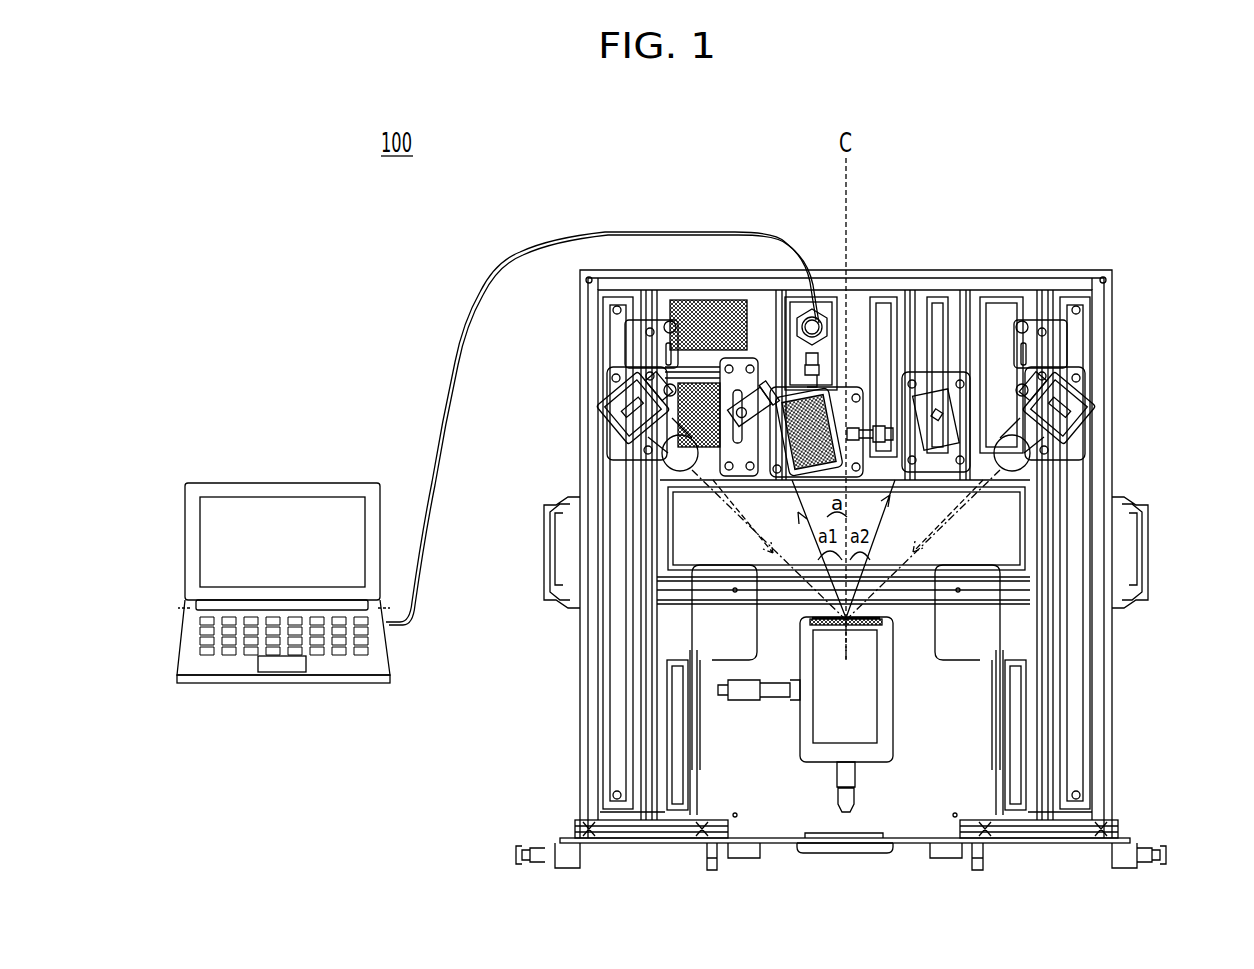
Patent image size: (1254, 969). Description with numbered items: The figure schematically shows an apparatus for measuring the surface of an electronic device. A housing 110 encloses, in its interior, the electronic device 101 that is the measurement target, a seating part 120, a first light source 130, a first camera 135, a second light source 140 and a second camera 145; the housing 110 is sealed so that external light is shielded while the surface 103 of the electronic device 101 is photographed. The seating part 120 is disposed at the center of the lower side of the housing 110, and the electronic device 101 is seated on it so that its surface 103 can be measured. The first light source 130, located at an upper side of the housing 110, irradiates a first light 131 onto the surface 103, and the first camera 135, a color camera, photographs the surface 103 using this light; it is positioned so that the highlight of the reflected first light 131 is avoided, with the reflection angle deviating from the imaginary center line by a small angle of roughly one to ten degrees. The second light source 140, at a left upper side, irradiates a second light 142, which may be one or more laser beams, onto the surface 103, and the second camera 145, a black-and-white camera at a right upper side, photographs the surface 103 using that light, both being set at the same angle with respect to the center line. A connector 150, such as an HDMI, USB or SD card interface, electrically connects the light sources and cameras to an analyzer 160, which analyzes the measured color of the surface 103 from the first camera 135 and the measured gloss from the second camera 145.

The housing 110 is at (1111, 296).
The seating part 120 is at (894, 738).
The first light source 130 is at (626, 400).
The first light 131 is at (794, 498).
The first camera 135 is at (786, 390).
The second light source 140 is at (722, 405).
The second light 142 is at (746, 500).
The second camera 145 is at (913, 376).
The connector 150 is at (504, 272).
The analyzer 160 is at (284, 483).
The electronic device 101 is at (834, 732).
The surface 103 is at (872, 615).